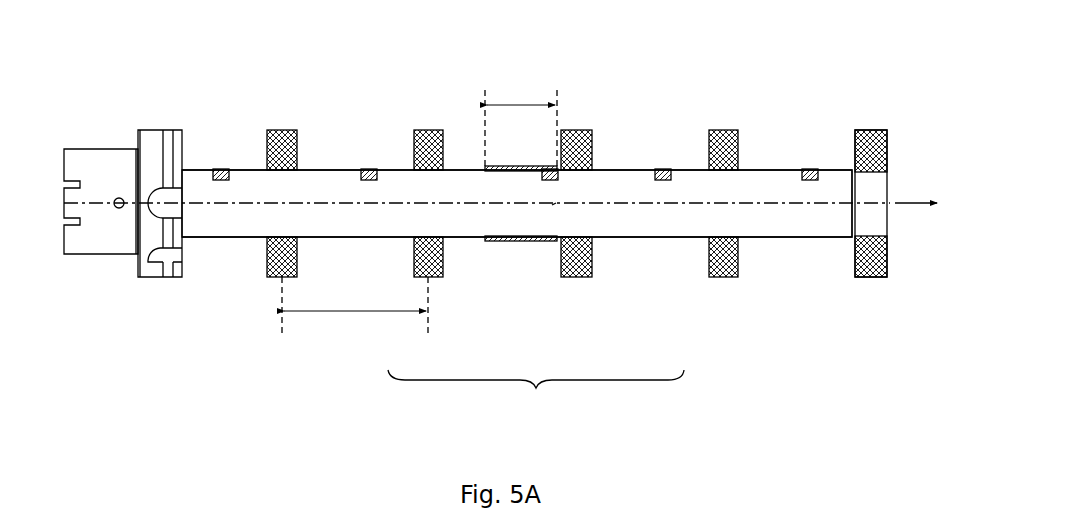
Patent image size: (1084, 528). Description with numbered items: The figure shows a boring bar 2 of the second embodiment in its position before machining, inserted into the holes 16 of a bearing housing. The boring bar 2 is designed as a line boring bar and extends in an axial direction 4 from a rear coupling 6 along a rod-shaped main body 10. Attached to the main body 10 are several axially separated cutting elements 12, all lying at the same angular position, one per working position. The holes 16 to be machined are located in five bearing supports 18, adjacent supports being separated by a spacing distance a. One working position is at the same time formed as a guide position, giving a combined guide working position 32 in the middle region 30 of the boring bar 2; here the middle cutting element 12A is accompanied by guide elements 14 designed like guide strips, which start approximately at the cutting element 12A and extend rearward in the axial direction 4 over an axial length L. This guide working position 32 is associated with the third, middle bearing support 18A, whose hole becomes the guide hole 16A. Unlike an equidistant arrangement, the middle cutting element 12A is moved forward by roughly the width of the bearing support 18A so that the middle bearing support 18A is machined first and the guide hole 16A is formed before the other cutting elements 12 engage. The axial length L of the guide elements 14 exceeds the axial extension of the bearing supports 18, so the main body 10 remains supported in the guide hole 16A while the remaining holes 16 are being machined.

The boring bar 2 is at (826, 93).
The axial direction 4 is at (912, 200).
The coupling 6 is at (107, 248).
The main body 10 is at (223, 225).
The cutting elements 12 is at (222, 168).
The middle cutting element 12A is at (548, 169).
The guide elements 14 is at (523, 242).
The holes 16 is at (300, 170).
The guide hole 16A is at (594, 170).
The bearing supports 18 is at (275, 278).
The middle bearing support 18A is at (575, 278).
The middle region 30 is at (536, 388).
The guide working position 32 is at (552, 205).
The axial length L is at (523, 105).
The spacing distance a is at (352, 312).